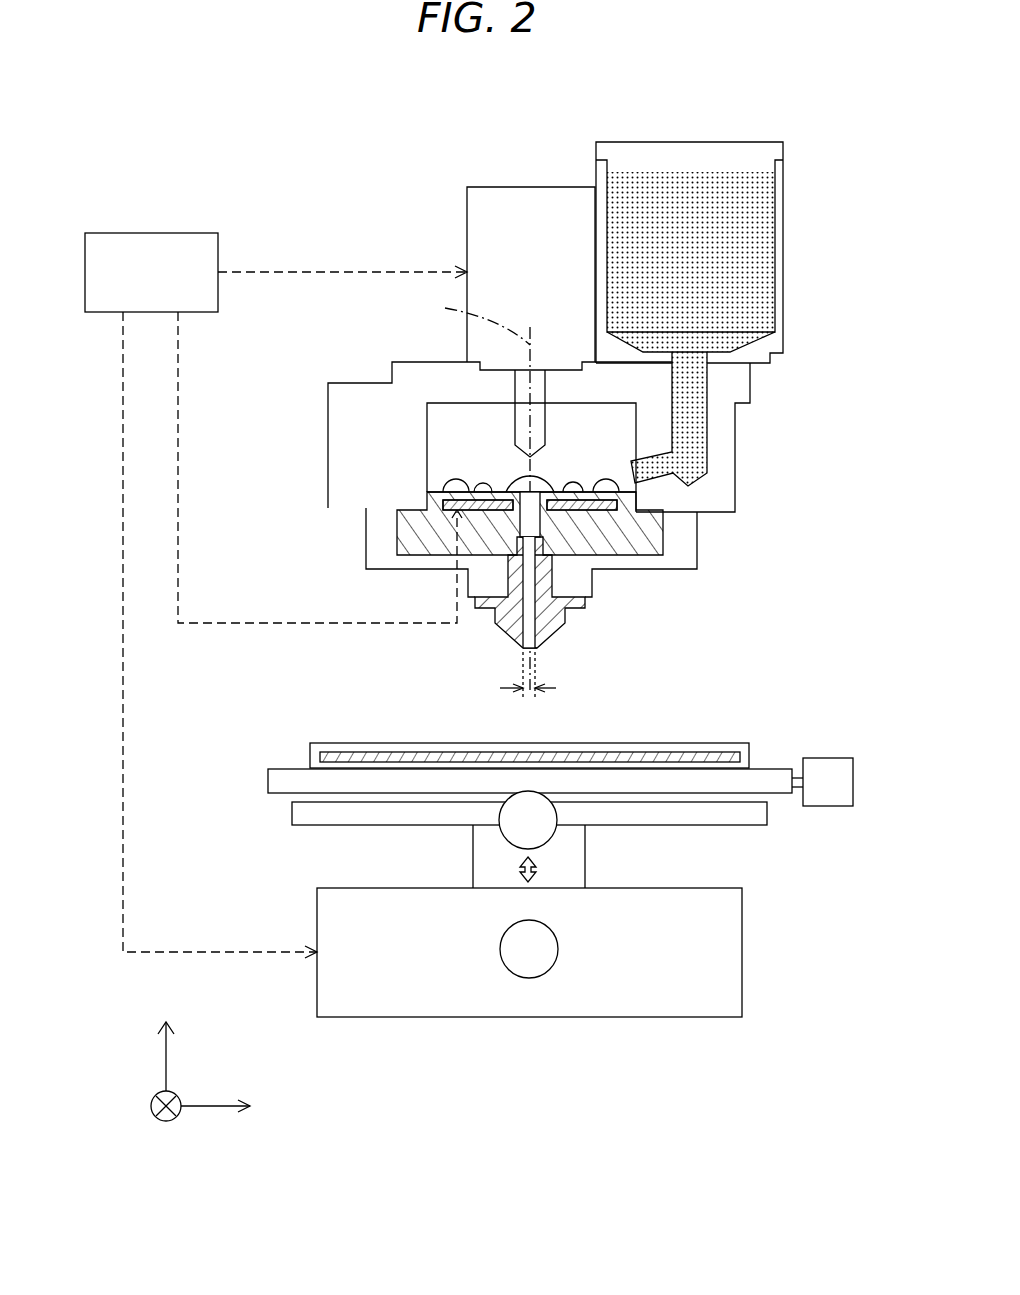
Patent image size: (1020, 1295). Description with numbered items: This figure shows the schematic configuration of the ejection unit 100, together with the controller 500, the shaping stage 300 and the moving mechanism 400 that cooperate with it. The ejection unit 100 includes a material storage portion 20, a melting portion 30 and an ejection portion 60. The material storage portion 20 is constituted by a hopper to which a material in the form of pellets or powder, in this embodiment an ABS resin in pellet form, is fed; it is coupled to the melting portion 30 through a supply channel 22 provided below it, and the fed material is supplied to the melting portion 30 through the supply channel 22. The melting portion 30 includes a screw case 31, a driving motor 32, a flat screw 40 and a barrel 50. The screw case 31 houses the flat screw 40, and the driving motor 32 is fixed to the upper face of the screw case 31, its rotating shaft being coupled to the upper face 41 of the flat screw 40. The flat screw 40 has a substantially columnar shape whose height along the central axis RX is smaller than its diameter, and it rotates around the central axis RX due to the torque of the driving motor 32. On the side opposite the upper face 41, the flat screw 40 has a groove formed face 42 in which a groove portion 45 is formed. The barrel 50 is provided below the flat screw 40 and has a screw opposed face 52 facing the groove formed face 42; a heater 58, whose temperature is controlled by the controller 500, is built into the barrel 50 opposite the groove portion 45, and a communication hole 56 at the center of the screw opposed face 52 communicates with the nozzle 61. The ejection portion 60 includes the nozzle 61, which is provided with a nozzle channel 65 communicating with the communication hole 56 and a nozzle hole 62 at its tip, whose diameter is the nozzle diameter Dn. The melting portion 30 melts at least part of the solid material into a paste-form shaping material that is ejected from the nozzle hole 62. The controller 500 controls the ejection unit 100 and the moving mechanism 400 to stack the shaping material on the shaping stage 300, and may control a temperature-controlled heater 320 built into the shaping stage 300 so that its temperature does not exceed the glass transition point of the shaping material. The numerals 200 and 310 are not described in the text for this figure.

The ejection unit 100 is at (182, 130).
The shaping unit 200 is at (345, 165).
The controller 500 is at (147, 233).
The material storage portion 20 is at (784, 247).
The supply channel 22 is at (690, 422).
The melting portion 30 is at (388, 257).
The driving motor 32 is at (467, 215).
The screw case 31 is at (432, 362).
The flat screw 40 is at (447, 428).
The upper face 41 is at (457, 403).
The groove portion 45 is at (513, 478).
The screw opposed face 52 is at (428, 482).
The groove formed face 42 is at (458, 510).
The barrel 50 is at (437, 540).
The heater 58 is at (540, 522).
The communication hole 56 is at (638, 543).
The ejection portion 60 is at (722, 613).
The nozzle channel 65 is at (528, 597).
The nozzle 61 is at (512, 632).
The nozzle hole 62 is at (528, 652).
The shaping stage 300 is at (777, 742).
The table 310 is at (697, 745).
The temperature-controlled heater 320 is at (327, 745).
The moving mechanism 400 is at (785, 872).